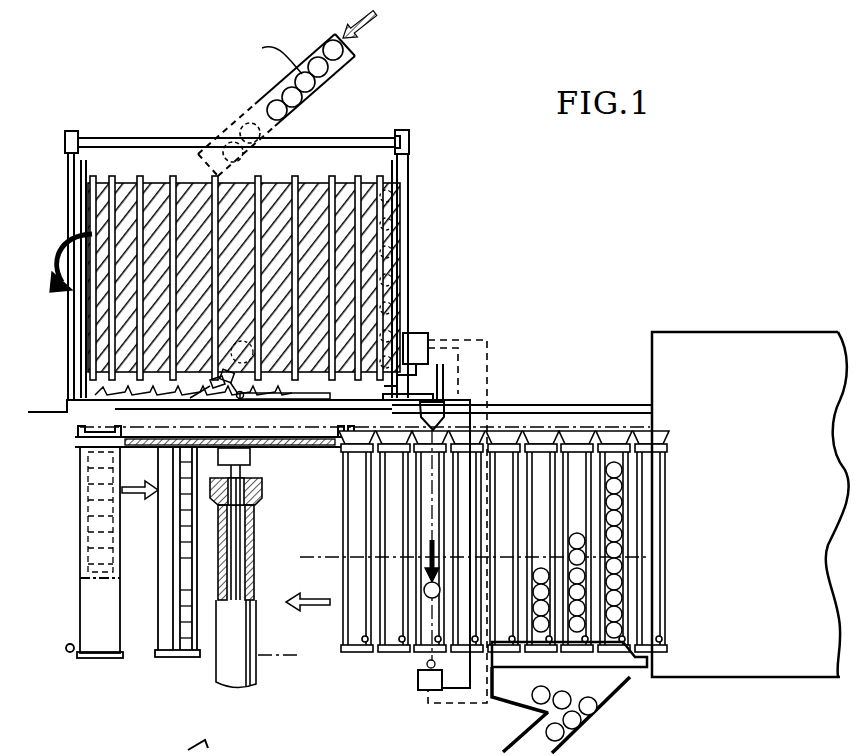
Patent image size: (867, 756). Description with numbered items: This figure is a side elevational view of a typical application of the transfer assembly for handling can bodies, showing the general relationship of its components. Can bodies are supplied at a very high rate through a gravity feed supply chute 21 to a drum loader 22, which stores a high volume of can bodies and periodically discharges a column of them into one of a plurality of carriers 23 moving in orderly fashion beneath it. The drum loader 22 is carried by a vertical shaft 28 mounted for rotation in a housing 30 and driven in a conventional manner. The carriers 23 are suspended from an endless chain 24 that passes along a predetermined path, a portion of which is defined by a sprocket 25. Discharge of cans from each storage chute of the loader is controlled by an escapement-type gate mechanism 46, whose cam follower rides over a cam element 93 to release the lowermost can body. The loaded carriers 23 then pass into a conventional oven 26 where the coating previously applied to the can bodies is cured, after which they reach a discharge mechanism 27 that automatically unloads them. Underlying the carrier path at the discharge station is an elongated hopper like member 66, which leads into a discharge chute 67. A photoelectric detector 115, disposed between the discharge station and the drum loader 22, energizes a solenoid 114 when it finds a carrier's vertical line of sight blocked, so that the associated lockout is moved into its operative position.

The gravity feed supply chute 21 is at (347, 70).
The drum loader 22 is at (383, 240).
The carrier 23 is at (78, 556).
The endless chain 24 is at (346, 536).
The sprocket 25 is at (337, 447).
The oven 26 is at (724, 357).
The discharge mechanism 27 is at (614, 712).
The vertical shaft 28 is at (236, 516).
The housing 30 is at (256, 642).
The gate mechanism 46 is at (250, 394).
The hopper like member 66 is at (615, 682).
The discharge chute 67 is at (548, 740).
The cam element 93 is at (68, 393).
The solenoid 114 is at (405, 331).
The detector 115 is at (412, 680).